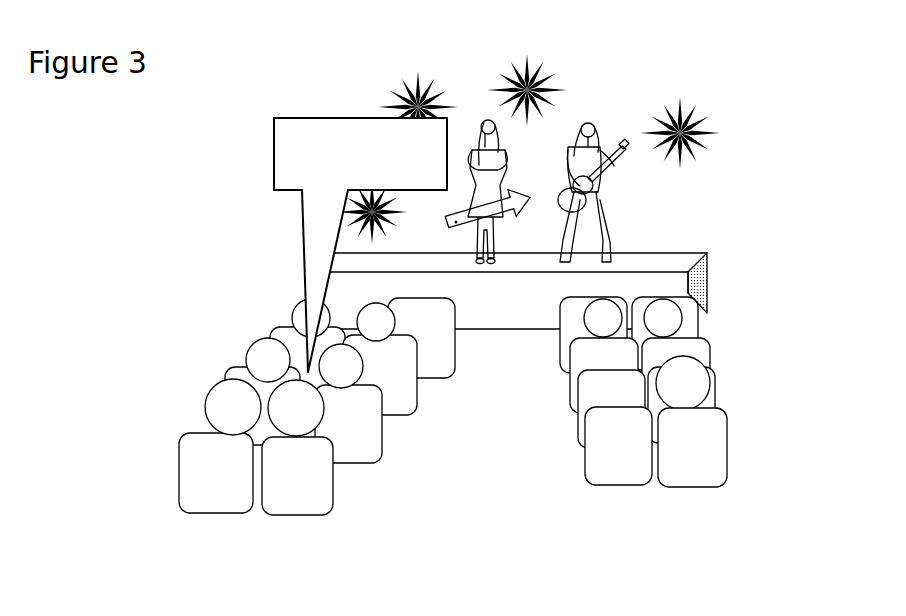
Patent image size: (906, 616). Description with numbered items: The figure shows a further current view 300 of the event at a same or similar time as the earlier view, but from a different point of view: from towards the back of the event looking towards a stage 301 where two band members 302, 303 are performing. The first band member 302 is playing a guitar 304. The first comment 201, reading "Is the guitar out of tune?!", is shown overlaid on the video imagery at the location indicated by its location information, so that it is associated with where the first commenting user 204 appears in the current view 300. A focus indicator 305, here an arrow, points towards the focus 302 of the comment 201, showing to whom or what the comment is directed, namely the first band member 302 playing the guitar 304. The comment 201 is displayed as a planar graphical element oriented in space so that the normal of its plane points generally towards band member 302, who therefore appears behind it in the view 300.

The current view 300 is at (302, 77).
The first comment 201 is at (273, 157).
The stage 301 is at (678, 263).
The first band member 302 is at (592, 129).
The second band member 303 is at (487, 128).
The guitar 304 is at (591, 214).
The focus indicator 305 is at (455, 221).
The first commenting user 204 is at (302, 412).